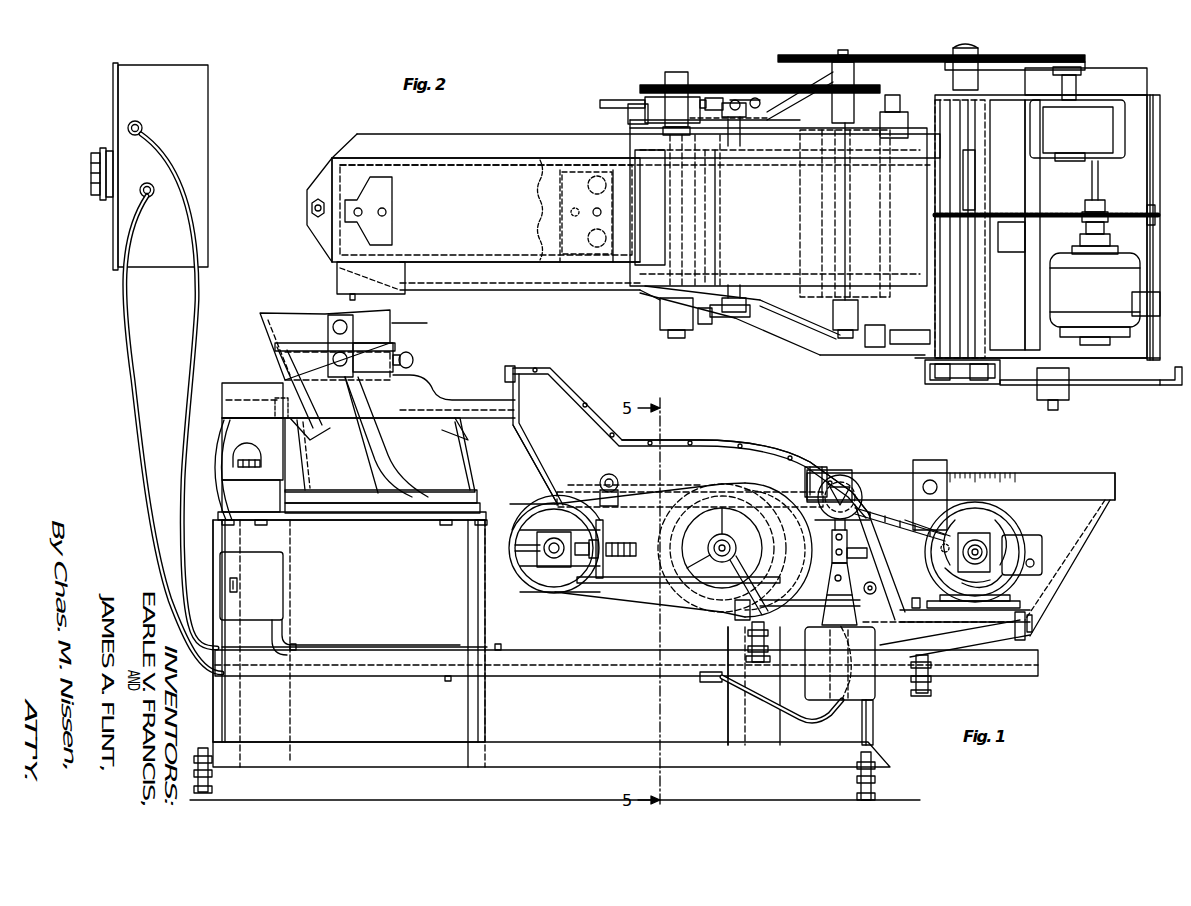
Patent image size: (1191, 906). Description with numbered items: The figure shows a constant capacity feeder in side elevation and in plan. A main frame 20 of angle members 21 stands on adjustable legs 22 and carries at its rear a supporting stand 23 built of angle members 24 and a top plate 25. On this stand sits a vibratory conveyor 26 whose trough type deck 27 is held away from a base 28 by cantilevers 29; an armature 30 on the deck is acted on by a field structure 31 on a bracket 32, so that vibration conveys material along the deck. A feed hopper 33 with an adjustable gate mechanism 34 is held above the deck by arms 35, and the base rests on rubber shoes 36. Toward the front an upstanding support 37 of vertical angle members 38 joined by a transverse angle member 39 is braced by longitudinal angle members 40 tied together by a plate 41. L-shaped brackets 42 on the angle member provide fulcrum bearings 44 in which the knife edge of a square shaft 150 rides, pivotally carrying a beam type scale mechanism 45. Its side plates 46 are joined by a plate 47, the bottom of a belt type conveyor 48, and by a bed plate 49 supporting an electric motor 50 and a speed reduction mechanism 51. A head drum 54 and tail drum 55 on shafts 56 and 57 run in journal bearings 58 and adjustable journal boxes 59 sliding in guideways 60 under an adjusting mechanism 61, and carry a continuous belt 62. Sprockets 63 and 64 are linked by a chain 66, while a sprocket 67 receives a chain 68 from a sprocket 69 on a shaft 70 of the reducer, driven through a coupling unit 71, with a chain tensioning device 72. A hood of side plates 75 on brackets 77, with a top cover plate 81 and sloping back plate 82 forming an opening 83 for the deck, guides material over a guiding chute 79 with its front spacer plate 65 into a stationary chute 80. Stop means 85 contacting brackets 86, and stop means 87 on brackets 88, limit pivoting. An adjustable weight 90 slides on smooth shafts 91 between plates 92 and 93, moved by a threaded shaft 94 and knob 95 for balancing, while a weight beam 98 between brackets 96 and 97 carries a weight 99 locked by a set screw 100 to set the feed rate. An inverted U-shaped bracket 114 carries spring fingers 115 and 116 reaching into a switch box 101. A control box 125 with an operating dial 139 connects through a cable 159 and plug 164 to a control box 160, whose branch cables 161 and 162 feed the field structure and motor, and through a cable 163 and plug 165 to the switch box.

In FIG. 1, the main frame 20 is at (585, 735).
In FIG. 2, the angle members 21 is at (312, 193).
In FIG. 1, the angle members 21 is at (372, 750).
In FIG. 2, the adjustable legs 22 is at (310, 208).
In FIG. 1, the adjustable legs 22 is at (210, 780).
In FIG. 1, the supporting stand 23 is at (440, 575).
In FIG. 1, the angle members 24 is at (345, 530).
In FIG. 2, the supporting top plate 25 is at (486, 224).
In FIG. 1, the supporting top plate 25 is at (383, 525).
In FIG. 1, the vibratory conveyor 26 is at (440, 375).
In FIG. 1, the trough type deck 27 is at (462, 396).
In FIG. 1, the base 28 is at (345, 498).
In FIG. 1, the cantilevers 29 is at (370, 455).
In FIG. 1, the armature 30 is at (312, 420).
In FIG. 1, the field structure 31 is at (238, 393).
In FIG. 1, the bracket 32 is at (228, 461).
In FIG. 1, the feed hopper 33 is at (288, 322).
In FIG. 1, the adjustable gate mechanism 34 is at (403, 352).
In FIG. 1, the arms 35 is at (395, 448).
In FIG. 2, the rubber shoes 36 is at (590, 182).
In FIG. 1, the rubber shoes 36 is at (225, 514).
In FIG. 1, the upstanding support 37 is at (880, 735).
In FIG. 2, the vertical angle members 38 is at (982, 120).
In FIG. 1, the vertical angle members 38 is at (872, 722).
In FIG. 2, the transversely extending angle member 39 is at (985, 148).
In FIG. 1, the transversely extending angle member 39 is at (850, 548).
In FIG. 2, the longitudinally extending angle members 40 is at (488, 146).
In FIG. 1, the longitudinally extending angle members 40 is at (370, 655).
In FIG. 2, the transversely extending plate 41 is at (1160, 135).
In FIG. 2, the L-shaped bracket 42 is at (948, 150).
In FIG. 1, the L-shaped bracket 42 is at (862, 507).
In FIG. 1, the fulcrum bearing 44 is at (828, 470).
In FIG. 2, the beam type scale mechanism 45 is at (905, 375).
In FIG. 1, the beam type scale mechanism 45 is at (803, 452).
In FIG. 2, the side plates 46 is at (780, 318).
In FIG. 1, the side plates 46 is at (648, 568).
In FIG. 2, the transversely extending plate 47 is at (702, 322).
In FIG. 1, the transversely extending plate 47 is at (632, 545).
In FIG. 2, the belt type conveyor 48 is at (630, 305).
In FIG. 1, the belt type conveyor 48 is at (535, 600).
In FIG. 2, the bed plate 49 is at (1030, 283).
In FIG. 1, the bed plate 49 is at (1030, 608).
In FIG. 2, the driving electric motor 50 is at (1105, 299).
In FIG. 1, the driving electric motor 50 is at (1000, 522).
In FIG. 2, the speed reduction mechanism 51 is at (1077, 130).
In FIG. 1, the speed reduction mechanism 51 is at (928, 590).
In FIG. 2, the head drum 54 is at (800, 175).
In FIG. 1, the head drum 54 is at (695, 588).
In FIG. 2, the tail drum 55 is at (720, 232).
In FIG. 1, the tail drum 55 is at (575, 580).
In FIG. 2, the shaft 56 is at (845, 52).
In FIG. 1, the shaft 56 is at (718, 546).
In FIG. 2, the shaft 57 is at (675, 70).
In FIG. 1, the shaft 57 is at (555, 592).
In FIG. 2, the journal bearings 58 is at (852, 118).
In FIG. 1, the journal bearings 58 is at (705, 553).
In FIG. 2, the adjustable journal boxes 59 is at (640, 100).
In FIG. 1, the adjustable journal boxes 59 is at (528, 565).
In FIG. 1, the guideways 60 is at (525, 548).
In FIG. 2, the belt tensioning and journal box adjusting mechanism 61 is at (735, 100).
In FIG. 1, the belt tensioning and journal box adjusting mechanism 61 is at (601, 560).
In FIG. 2, the continuous belt 62 is at (645, 138).
In FIG. 1, the continuous belt 62 is at (535, 510).
In FIG. 2, the sprocket 63 is at (860, 78).
In FIG. 2, the sprocket 64 is at (690, 82).
In FIG. 1, the front spacer plate 65 is at (815, 575).
In FIG. 2, the chain 66 is at (718, 98).
In FIG. 1, the chain 66 is at (584, 560).
In FIG. 2, the sprocket 67 is at (822, 54).
In FIG. 2, the chain 68 is at (1035, 55).
In FIG. 1, the chain 68 is at (900, 522).
In FIG. 2, the sprocket 69 is at (1075, 67).
In FIG. 2, the shaft 70 is at (1075, 82).
In FIG. 2, the coupling unit 71 is at (1088, 205).
In FIG. 2, the adjustable chain tensioning device 72 is at (975, 60).
In FIG. 1, the side plates 75 is at (691, 443).
In FIG. 2, the brackets 77 is at (728, 125).
In FIG. 1, the brackets 77 is at (614, 478).
In FIG. 1, the guiding chute 79 is at (737, 612).
In FIG. 1, the stationary chute 80 is at (728, 717).
In FIG. 2, the top cover plate 81 is at (778, 203).
In FIG. 1, the top cover plate 81 is at (595, 400).
In FIG. 1, the sloping back plate 82 is at (520, 452).
In FIG. 1, the opening 83 is at (510, 380).
In FIG. 1, the adjustable stop means 85 is at (925, 695).
In FIG. 1, the brackets 86 is at (928, 660).
In FIG. 1, the adjustable stop means 87 is at (722, 675).
In FIG. 2, the brackets 88 is at (900, 112).
In FIG. 1, the brackets 88 is at (748, 629).
In FIG. 2, the adjustable weight 90 is at (1100, 236).
In FIG. 1, the adjustable weight 90 is at (990, 641).
In FIG. 2, the smooth shafts 91 is at (1005, 170).
In FIG. 2, the transversely extending plate 92 is at (1150, 192).
In FIG. 1, the transversely extending plate 92 is at (1030, 640).
In FIG. 1, the transversely extending plate 93 is at (829, 665).
In FIG. 2, the threaded shaft 94 is at (1011, 237).
In FIG. 2, the operating knob 95 is at (1156, 212).
In FIG. 1, the operating knob 95 is at (1035, 628).
In FIG. 2, the upstanding bracket 96 is at (1172, 360).
In FIG. 1, the upstanding bracket 96 is at (1080, 533).
In FIG. 2, the bracket 97 is at (925, 370).
In FIG. 1, the bracket 97 is at (808, 466).
In FIG. 2, the weight beam 98 is at (1147, 386).
In FIG. 1, the weight beam 98 is at (1050, 480).
In FIG. 2, the adjustable weight 99 is at (1068, 392).
In FIG. 1, the adjustable weight 99 is at (942, 465).
In FIG. 2, the set screw 100 is at (1062, 408).
In FIG. 1, the set screw 100 is at (940, 487).
In FIG. 2, the switch box 101 is at (995, 371).
In FIG. 1, the switch box 101 is at (868, 697).
In FIG. 2, the inverted U-shaped bracket 114 is at (930, 340).
In FIG. 1, the inverted U-shaped bracket 114 is at (848, 553).
In FIG. 2, the spring finger 115 is at (948, 376).
In FIG. 1, the spring finger 115 is at (838, 602).
In FIG. 2, the spring finger 116 is at (982, 380).
In FIG. 1, the spring finger 116 is at (855, 605).
In FIG. 2, the control box 125 is at (213, 122).
In FIG. 2, the operating dial 139 is at (92, 155).
In FIG. 2, the square shaft 150 is at (975, 155).
In FIG. 1, the square shaft 150 is at (845, 488).
In FIG. 2, the cable 159 is at (196, 282).
In FIG. 2, the control box 160 is at (345, 282).
In FIG. 1, the control box 160 is at (284, 586).
In FIG. 1, the branch cable 161 is at (232, 484).
In FIG. 1, the branch cable 162 is at (283, 633).
In FIG. 2, the cable 163 is at (137, 326).
In FIG. 1, the cable 163 is at (767, 707).
In FIG. 2, the receptacle plug 164 is at (139, 122).
In FIG. 2, the receptacle plug 165 is at (149, 196).